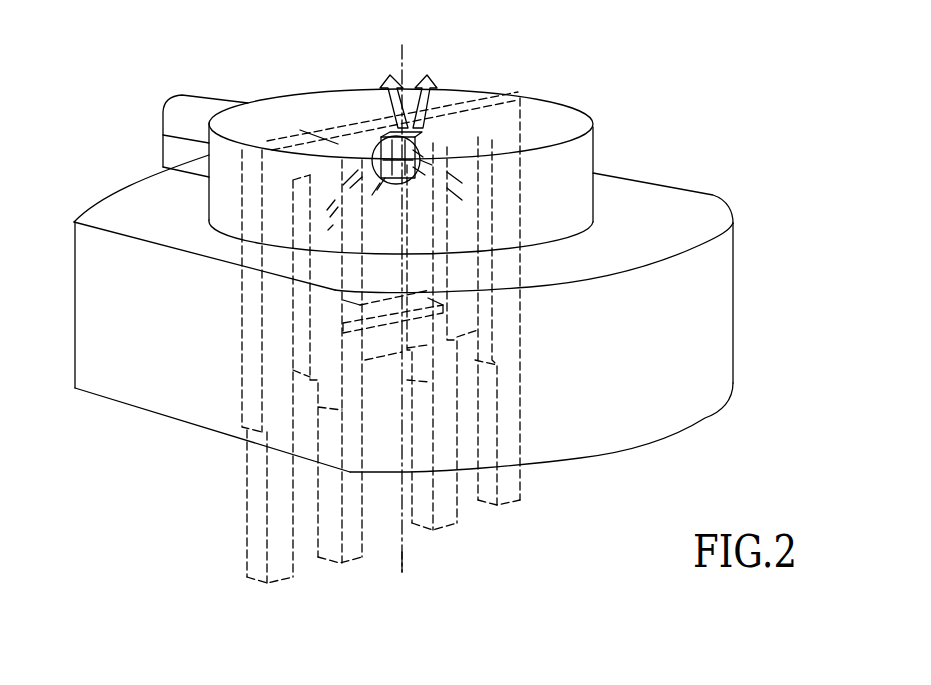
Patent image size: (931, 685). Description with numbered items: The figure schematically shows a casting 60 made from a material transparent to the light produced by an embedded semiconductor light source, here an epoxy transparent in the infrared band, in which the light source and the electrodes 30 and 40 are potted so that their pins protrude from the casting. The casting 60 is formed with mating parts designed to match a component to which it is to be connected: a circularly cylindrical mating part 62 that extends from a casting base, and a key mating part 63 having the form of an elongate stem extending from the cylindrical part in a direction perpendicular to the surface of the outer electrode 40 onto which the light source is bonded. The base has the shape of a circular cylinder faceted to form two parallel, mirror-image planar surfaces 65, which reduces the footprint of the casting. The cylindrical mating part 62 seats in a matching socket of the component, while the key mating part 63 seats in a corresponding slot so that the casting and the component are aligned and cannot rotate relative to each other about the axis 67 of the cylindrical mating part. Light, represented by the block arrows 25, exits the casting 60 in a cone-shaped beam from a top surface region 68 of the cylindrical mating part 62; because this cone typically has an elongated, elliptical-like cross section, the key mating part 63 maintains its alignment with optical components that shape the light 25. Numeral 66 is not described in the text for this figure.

The block arrows / light 25 is at (430, 100).
The electrode 30 is at (300, 293).
The outer electrode 40 is at (510, 121).
The casting 60 is at (597, 73).
The circularly cylindrical mating part 62 is at (580, 153).
The key mating part 63 is at (182, 110).
The planar surfaces 65 is at (697, 193).
The back top surface edge 66 is at (105, 200).
The axis 67 is at (403, 557).
The top surface region 68 is at (210, 117).